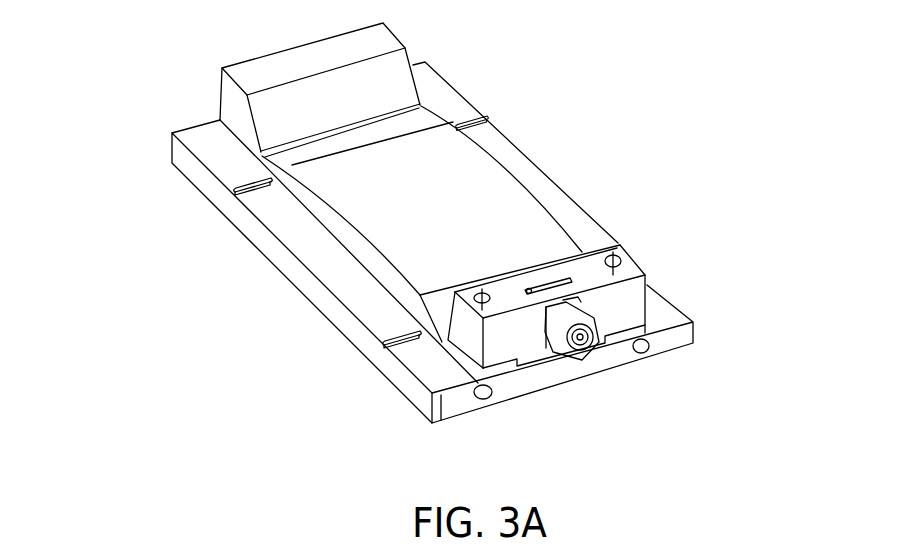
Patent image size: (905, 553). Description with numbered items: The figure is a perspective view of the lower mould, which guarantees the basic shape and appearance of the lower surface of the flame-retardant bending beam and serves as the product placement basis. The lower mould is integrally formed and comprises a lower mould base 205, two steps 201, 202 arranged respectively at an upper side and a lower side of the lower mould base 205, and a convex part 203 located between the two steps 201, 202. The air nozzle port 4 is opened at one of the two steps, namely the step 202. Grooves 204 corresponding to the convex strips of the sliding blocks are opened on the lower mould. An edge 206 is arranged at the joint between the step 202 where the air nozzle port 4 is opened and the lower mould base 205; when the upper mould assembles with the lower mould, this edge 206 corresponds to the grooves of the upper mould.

The step 201 is at (377, 72).
The step 202 is at (588, 270).
The convex part 203 is at (450, 180).
The grooves 204 is at (415, 330).
The lower mould base 205 is at (345, 285).
The edge 206 is at (492, 375).
The air nozzle port 4 is at (585, 357).